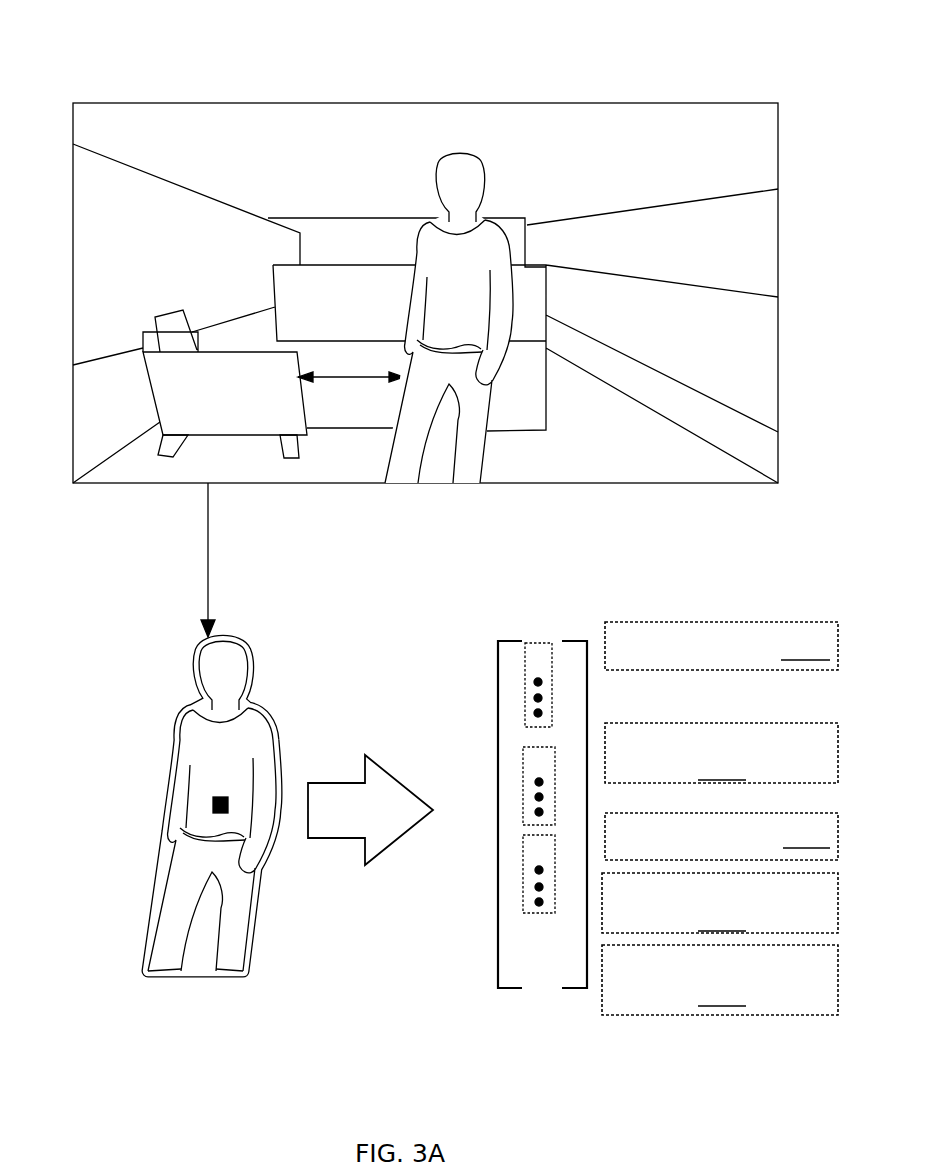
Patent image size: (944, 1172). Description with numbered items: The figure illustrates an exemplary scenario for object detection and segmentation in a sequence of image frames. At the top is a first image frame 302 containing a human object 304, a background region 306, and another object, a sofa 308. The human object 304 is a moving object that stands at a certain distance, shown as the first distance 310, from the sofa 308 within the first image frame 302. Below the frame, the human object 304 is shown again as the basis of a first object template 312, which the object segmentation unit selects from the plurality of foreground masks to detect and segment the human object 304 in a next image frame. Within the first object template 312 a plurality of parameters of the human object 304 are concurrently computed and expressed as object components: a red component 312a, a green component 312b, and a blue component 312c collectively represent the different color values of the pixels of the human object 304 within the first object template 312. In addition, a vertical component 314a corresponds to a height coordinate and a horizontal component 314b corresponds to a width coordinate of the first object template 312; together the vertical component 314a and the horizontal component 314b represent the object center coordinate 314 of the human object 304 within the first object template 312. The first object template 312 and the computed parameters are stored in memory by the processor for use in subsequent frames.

The first image frame 302 is at (210, 103).
The human object 304 is at (450, 178).
The background region 306 is at (553, 138).
The sofa 308 is at (208, 415).
The first distance 310 is at (333, 377).
The first object template 312 is at (300, 748).
The red component 312a is at (605, 650).
The green component 312b is at (605, 752).
The blue component 312c is at (605, 845).
The object center coordinate 314 is at (220, 813).
The vertical component 314a is at (602, 893).
The horizontal component 314b is at (602, 945).